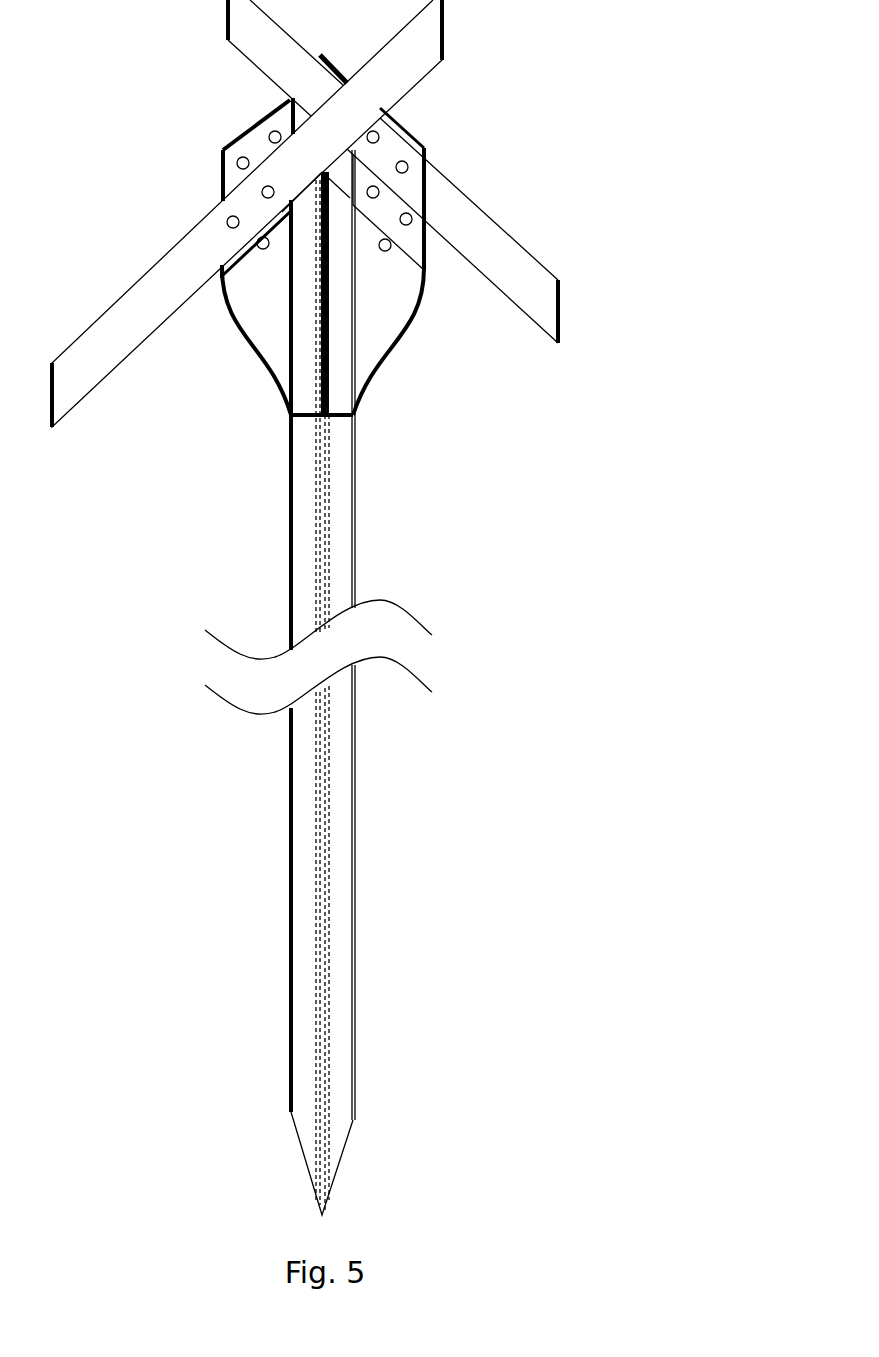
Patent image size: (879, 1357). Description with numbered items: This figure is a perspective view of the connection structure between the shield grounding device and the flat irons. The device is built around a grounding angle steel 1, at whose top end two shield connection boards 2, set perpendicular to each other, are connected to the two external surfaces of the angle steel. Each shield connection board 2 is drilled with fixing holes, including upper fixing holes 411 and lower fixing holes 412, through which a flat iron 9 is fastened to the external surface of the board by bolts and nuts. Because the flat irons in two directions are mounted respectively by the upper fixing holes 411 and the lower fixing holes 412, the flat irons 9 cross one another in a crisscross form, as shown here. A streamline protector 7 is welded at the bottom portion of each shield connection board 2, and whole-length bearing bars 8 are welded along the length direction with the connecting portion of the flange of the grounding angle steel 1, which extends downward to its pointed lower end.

The grounding angle steel 1 is at (343, 512).
The shield connection board 2 is at (260, 140).
The streamline protector 7 is at (258, 297).
The whole-length bearing bar 8 is at (323, 578).
The flat iron 9 is at (195, 262).
The upper fixing hole 411 is at (379, 137).
The lower fixing hole 412 is at (262, 190).